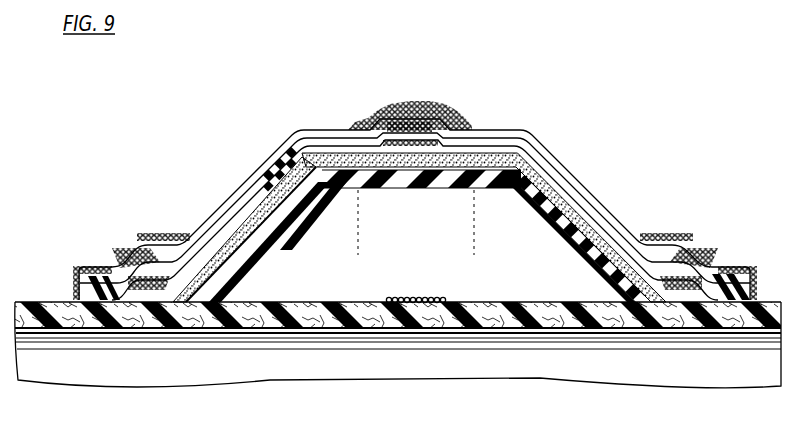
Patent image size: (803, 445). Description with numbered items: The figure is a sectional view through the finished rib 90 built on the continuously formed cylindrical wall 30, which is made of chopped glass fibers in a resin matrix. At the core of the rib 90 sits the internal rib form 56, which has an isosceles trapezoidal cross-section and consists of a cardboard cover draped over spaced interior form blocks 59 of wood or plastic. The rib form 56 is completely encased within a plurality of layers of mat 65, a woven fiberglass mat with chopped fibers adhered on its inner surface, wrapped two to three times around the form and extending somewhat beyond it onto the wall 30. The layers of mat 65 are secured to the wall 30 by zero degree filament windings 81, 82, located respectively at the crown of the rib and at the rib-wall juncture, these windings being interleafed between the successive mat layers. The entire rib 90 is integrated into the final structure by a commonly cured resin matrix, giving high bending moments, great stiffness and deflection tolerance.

The cylindrical wall 30 is at (366, 332).
The rib form 56 is at (510, 158).
The form blocks 59 is at (498, 183).
The mat 65 is at (558, 178).
The filament windings 81 is at (405, 122).
The filament windings 82 is at (122, 264).
The rib 90 is at (290, 117).